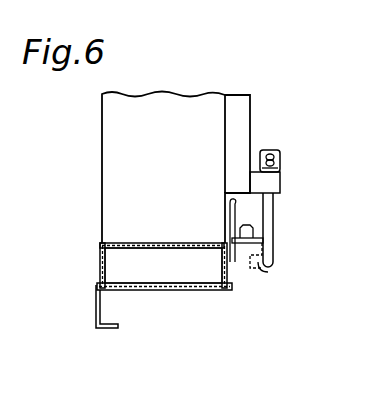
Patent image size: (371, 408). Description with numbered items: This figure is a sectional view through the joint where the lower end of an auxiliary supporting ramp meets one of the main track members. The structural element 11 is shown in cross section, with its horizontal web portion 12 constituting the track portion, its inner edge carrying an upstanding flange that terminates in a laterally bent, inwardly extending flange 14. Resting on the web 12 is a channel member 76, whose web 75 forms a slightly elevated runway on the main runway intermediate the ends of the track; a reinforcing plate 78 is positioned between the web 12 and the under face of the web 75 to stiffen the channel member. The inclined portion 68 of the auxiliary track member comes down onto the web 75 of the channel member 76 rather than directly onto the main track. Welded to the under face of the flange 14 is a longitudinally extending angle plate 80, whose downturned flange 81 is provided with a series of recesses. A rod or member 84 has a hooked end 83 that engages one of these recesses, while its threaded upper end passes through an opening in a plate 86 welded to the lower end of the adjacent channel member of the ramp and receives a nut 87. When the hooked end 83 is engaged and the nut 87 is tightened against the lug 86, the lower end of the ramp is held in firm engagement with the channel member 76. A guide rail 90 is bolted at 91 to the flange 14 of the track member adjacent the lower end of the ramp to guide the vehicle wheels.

The inclined portion 68 is at (112, 191).
The web 75 is at (190, 244).
The channel member 76 is at (100, 253).
The angle plate 80 is at (228, 270).
The web portion 12 is at (155, 290).
The reinforcing plate 78 is at (143, 262).
The structural element 11 is at (96, 295).
The plate 86 is at (275, 188).
The member 84 is at (275, 160).
The nut 87 is at (268, 151).
The downturned flange 81 is at (273, 262).
The guide rail 90 is at (236, 213).
The inwardly extending flange 14 is at (246, 232).
The bolt 91 is at (263, 248).
The hooked end 83 is at (266, 273).